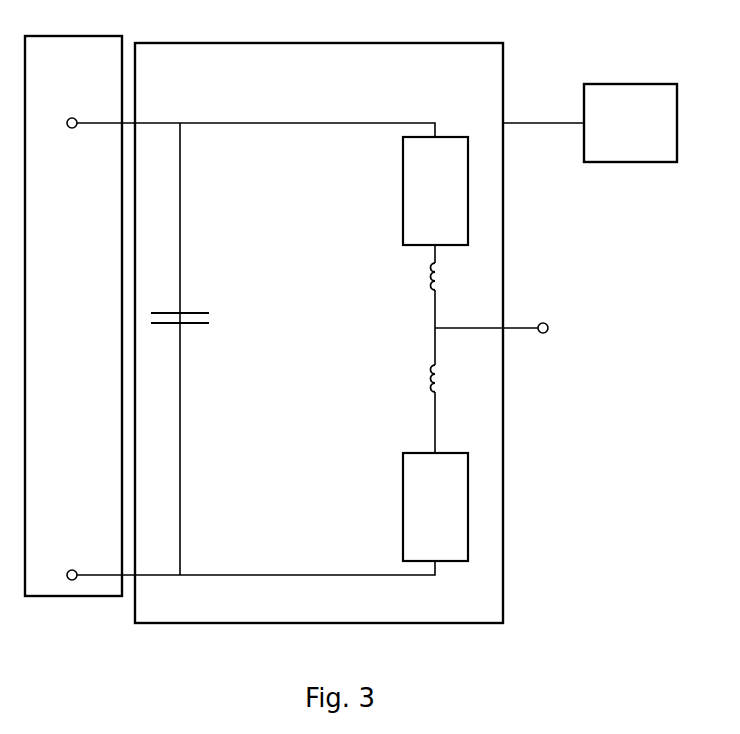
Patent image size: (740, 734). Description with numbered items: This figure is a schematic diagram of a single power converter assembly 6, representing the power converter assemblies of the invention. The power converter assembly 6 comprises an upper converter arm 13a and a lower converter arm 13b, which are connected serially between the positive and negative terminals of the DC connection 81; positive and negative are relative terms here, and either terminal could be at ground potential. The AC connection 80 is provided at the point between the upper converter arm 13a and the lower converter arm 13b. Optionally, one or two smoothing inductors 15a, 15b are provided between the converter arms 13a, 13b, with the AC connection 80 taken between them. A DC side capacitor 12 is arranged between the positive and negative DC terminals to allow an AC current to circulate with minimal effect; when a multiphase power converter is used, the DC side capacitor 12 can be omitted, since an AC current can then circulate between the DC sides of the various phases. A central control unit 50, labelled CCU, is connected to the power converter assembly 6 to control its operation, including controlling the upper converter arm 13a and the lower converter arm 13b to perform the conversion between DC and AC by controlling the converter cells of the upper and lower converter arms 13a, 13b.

The DC connection 81 is at (74, 316).
The power converter assembly 6 is at (319, 333).
The DC side capacitor 12 is at (190, 325).
The upper converter arm 13a is at (435, 191).
The lower converter arm 13b is at (435, 507).
The smoothing inductor 15a is at (430, 285).
The smoothing inductor 15b is at (430, 385).
The AC connection 80 is at (512, 328).
The central control unit 50 is at (590, 123).